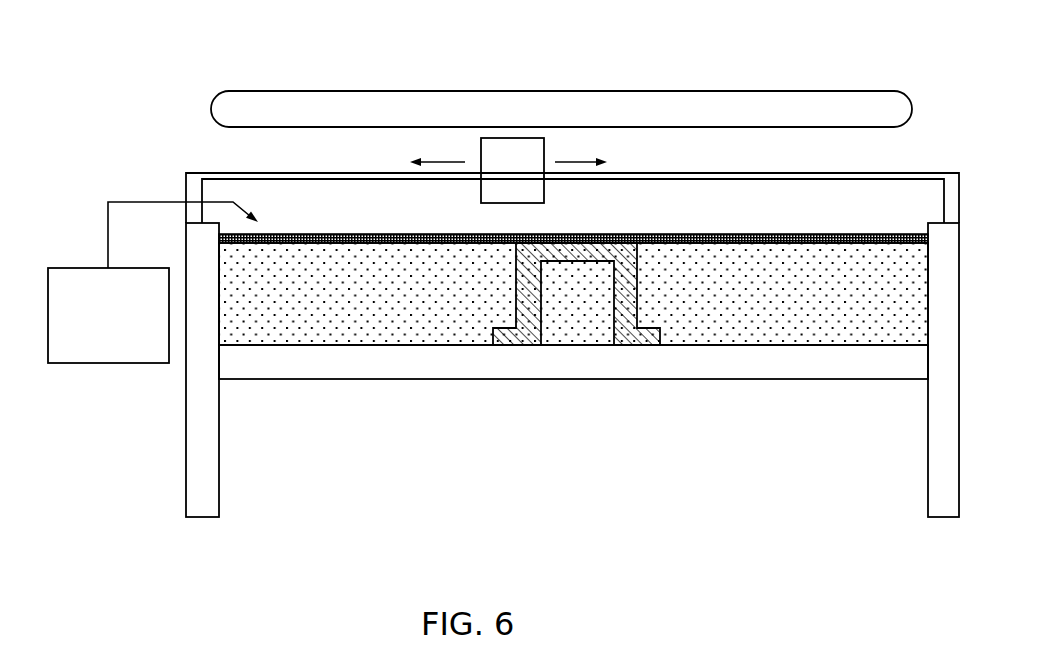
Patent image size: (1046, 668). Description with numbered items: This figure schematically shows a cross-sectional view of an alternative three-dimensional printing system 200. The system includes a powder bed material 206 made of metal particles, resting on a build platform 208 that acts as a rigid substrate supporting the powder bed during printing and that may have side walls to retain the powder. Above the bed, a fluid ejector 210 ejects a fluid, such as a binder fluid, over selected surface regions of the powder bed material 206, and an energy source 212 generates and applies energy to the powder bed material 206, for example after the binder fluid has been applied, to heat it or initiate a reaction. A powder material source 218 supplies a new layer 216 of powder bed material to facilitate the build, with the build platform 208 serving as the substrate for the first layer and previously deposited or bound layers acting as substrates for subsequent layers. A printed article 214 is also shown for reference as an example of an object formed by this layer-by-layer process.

The three-dimensional printing system 200 is at (184, 48).
The powder bed material 206 is at (403, 328).
The build platform 208 is at (698, 362).
The fluid ejector 210 is at (493, 184).
The energy source 212 is at (542, 120).
The printed article 214 is at (622, 253).
The new layer 216 is at (460, 237).
The powder material source 218 is at (89, 328).